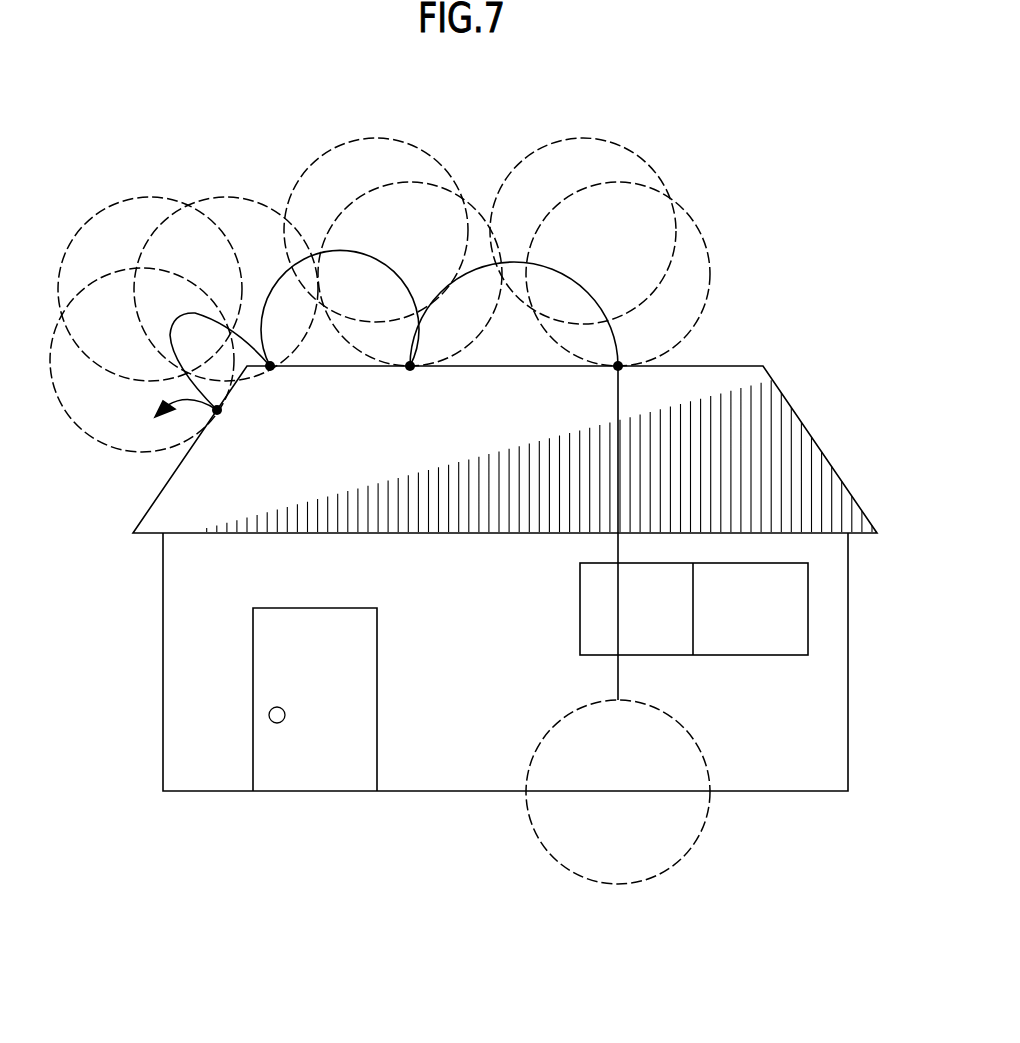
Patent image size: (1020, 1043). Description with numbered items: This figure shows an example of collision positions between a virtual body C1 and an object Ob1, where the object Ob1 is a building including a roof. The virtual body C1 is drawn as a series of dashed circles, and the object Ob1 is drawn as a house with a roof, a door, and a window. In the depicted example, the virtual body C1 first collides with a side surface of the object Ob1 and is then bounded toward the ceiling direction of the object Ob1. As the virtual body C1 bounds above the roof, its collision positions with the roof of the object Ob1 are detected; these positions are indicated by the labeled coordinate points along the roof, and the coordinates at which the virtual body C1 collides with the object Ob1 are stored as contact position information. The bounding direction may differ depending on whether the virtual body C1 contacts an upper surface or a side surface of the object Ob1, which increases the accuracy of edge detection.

The virtual body C1 is at (404, 494).
The object Ob1 is at (803, 423).